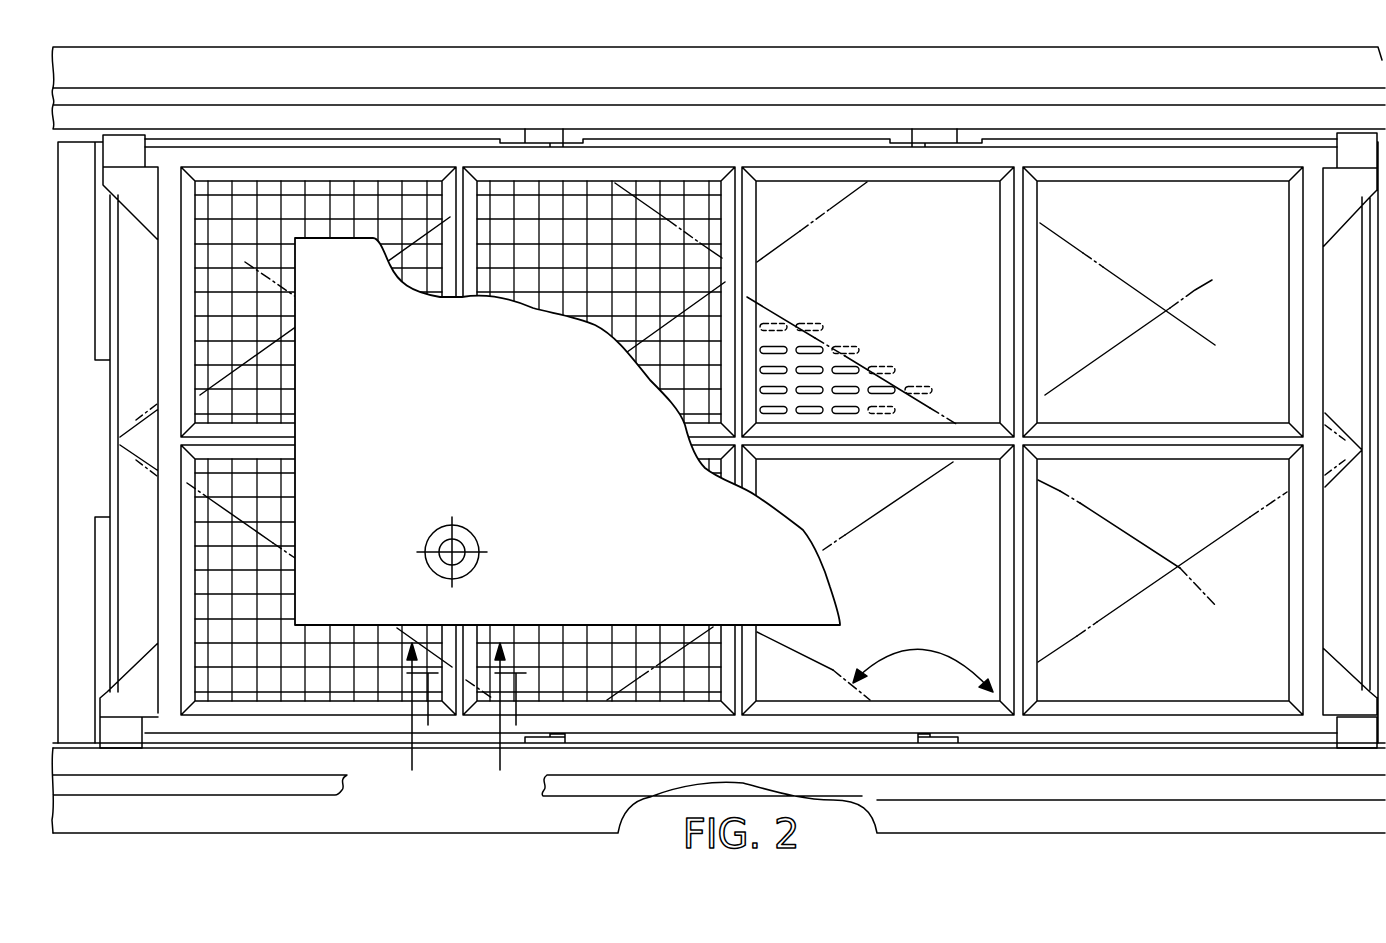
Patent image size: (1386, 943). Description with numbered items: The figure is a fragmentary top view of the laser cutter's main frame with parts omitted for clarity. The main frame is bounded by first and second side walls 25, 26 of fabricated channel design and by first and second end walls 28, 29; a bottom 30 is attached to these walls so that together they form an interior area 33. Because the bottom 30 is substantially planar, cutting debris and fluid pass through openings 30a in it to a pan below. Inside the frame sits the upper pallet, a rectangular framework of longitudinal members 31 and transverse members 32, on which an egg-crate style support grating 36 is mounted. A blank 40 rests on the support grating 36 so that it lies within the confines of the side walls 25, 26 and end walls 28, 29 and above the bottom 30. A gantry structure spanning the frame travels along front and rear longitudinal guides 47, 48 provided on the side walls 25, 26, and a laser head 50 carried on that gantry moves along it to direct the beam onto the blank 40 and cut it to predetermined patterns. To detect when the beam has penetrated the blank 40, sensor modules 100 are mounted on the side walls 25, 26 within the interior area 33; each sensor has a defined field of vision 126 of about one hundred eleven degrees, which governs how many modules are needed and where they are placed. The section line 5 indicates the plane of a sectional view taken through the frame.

The section line 5- 5 is at (464, 729).
The first side wall 25 is at (1307, 825).
The second side wall 26 is at (1045, 81).
The first end wall 28 is at (110, 410).
The second end wall 29 is at (1372, 545).
The bottom 30 is at (920, 251).
The openings 30a is at (870, 338).
The longitudinal members 31 is at (980, 452).
The transverse members 32 is at (753, 293).
The interior area 33 is at (973, 192).
The support grating 36 is at (310, 190).
The blank 40 is at (530, 400).
The front longitudinal guide 47 is at (293, 783).
The rear longitudinal guide 48 is at (492, 93).
The laser head 50 is at (462, 540).
The sensor module 100 is at (548, 743).
The field of vision 126 is at (918, 645).